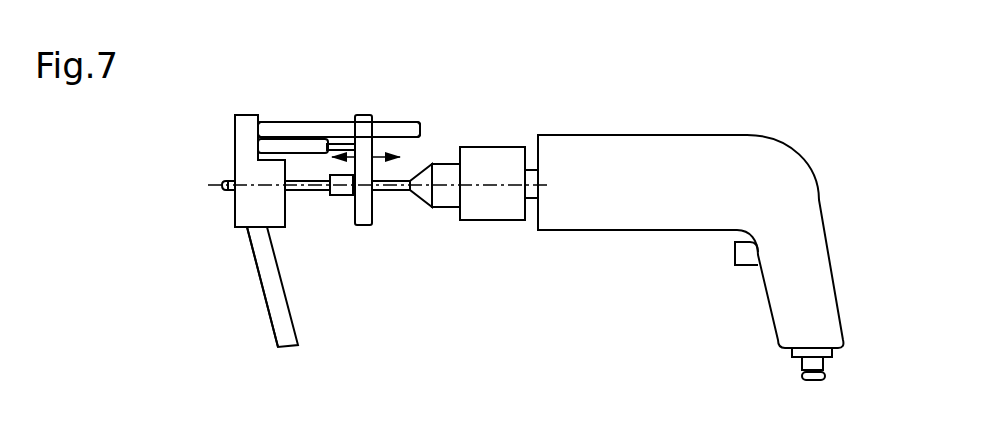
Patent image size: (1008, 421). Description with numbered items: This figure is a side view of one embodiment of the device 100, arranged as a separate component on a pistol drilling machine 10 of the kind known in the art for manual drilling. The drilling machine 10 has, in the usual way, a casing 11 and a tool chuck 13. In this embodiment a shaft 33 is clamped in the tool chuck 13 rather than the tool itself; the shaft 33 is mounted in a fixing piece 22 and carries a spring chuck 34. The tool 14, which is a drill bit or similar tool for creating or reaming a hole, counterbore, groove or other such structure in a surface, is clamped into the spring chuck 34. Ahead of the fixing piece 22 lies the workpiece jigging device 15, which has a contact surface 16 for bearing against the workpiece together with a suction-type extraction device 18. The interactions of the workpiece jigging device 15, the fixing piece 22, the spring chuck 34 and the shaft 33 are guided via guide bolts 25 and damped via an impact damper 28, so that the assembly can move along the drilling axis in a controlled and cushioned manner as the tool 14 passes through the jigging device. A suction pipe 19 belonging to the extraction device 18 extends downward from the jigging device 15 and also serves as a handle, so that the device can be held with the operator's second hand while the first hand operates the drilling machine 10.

The drilling machine 10 is at (733, 113).
The casing 11 is at (620, 147).
The tool chuck 13 is at (485, 230).
The tool 14 is at (310, 192).
The workpiece jigging device 15 is at (252, 177).
The contact surface 16 is at (235, 203).
The suction-type extraction device 18 is at (248, 268).
The suction pipe 19 is at (278, 315).
The fixing piece 22 is at (365, 128).
The guide bolts 25 is at (325, 128).
The impact damper 28 is at (295, 150).
The shaft 33 is at (398, 188).
The spring chuck 34 is at (342, 192).
The device 100 is at (290, 97).